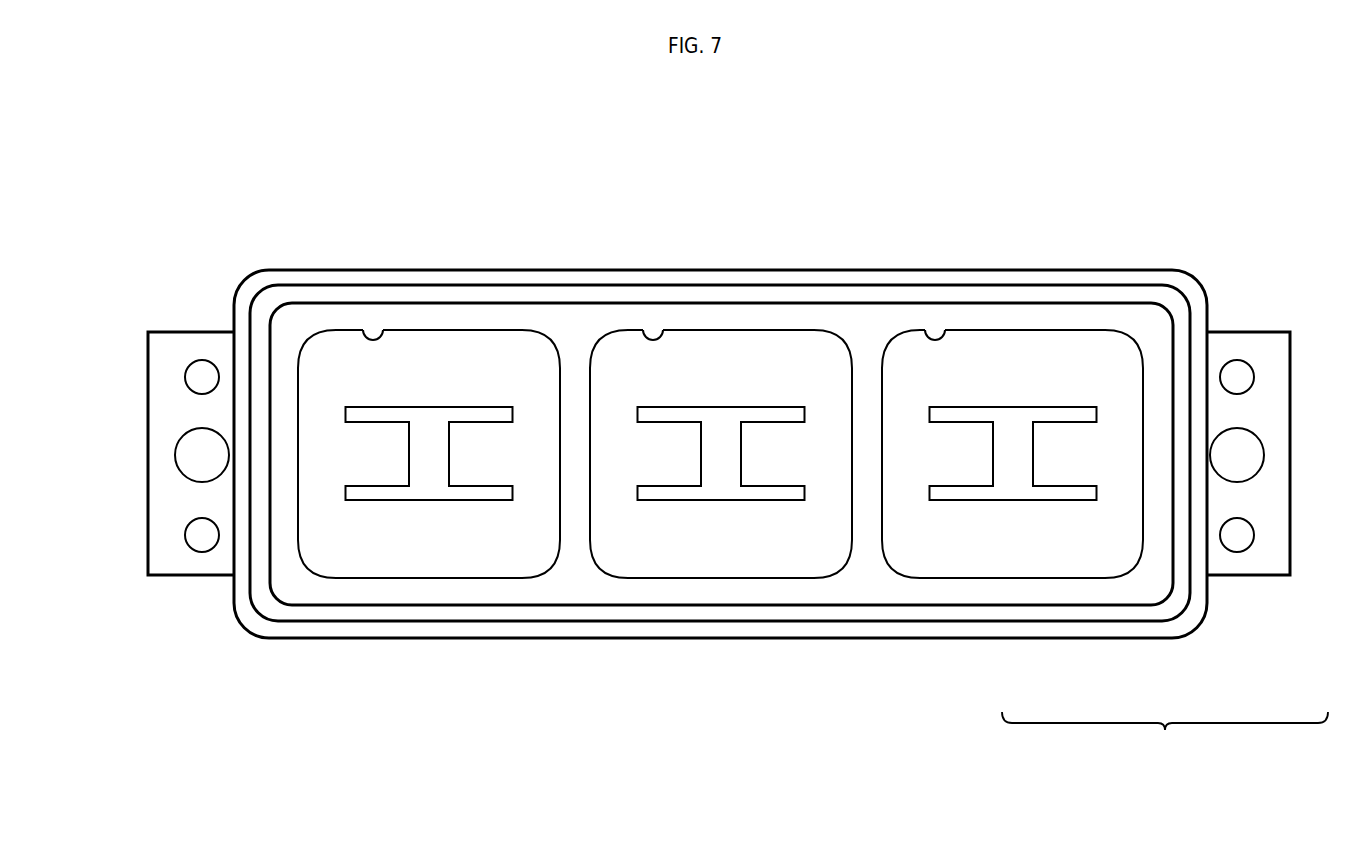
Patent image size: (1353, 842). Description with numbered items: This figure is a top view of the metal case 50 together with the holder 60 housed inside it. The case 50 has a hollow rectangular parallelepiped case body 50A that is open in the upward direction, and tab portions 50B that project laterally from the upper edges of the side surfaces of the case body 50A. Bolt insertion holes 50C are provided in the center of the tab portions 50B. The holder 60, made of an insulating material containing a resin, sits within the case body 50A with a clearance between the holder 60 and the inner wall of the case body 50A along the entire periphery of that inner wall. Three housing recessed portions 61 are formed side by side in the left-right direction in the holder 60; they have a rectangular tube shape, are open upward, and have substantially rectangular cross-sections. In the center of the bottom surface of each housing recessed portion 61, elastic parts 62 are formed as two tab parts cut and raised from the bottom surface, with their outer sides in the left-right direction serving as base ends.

The case 50 is at (1165, 735).
The case body 50A is at (1012, 638).
The tab portions 50B is at (212, 565).
The bolt insertion holes 50C is at (223, 460).
The holder 60 is at (803, 303).
The housing recessed portions 61 is at (372, 337).
The elastic parts 62 is at (387, 440).